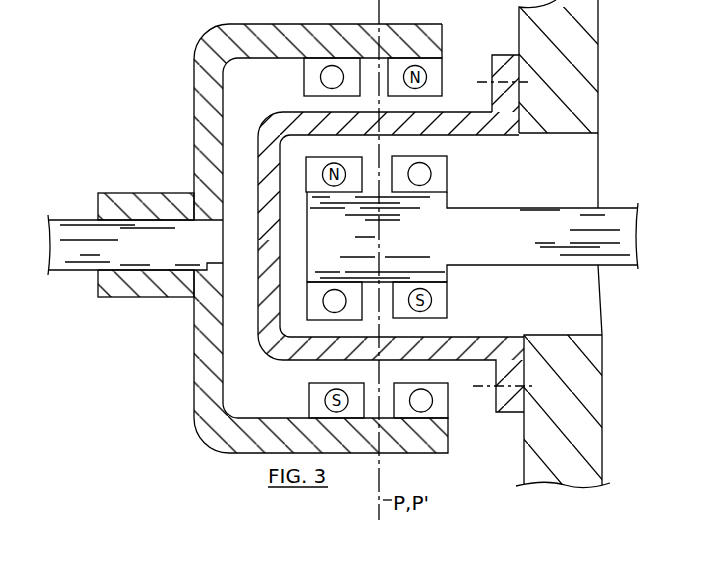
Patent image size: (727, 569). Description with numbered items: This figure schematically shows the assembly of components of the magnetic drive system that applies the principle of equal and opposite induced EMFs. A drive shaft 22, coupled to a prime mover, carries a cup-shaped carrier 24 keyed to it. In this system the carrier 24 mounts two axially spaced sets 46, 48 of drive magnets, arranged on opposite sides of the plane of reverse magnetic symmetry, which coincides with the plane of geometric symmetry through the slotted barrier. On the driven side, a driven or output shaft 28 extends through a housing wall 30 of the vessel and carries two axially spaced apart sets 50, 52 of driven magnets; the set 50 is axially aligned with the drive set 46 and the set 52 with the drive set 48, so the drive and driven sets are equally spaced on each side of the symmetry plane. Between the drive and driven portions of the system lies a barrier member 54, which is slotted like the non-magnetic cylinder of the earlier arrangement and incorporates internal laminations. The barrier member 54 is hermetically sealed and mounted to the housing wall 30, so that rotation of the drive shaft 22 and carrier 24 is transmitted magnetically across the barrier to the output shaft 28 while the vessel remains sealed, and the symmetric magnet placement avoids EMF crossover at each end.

The drive shaft 22 is at (78, 257).
The carrier member 24 is at (219, 428).
The output shaft 28 is at (620, 250).
The housing wall 30 is at (578, 428).
The set of drive magnets 46 is at (453, 401).
The set of drive magnets 48 is at (300, 78).
The set of driven magnets 50 is at (449, 165).
The set of driven magnets 52 is at (367, 320).
The barrier member 54 is at (285, 366).